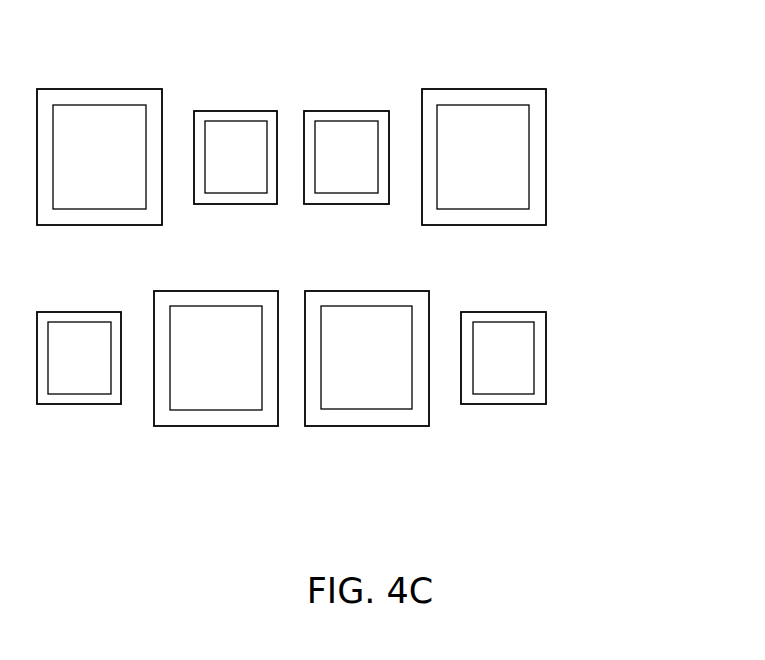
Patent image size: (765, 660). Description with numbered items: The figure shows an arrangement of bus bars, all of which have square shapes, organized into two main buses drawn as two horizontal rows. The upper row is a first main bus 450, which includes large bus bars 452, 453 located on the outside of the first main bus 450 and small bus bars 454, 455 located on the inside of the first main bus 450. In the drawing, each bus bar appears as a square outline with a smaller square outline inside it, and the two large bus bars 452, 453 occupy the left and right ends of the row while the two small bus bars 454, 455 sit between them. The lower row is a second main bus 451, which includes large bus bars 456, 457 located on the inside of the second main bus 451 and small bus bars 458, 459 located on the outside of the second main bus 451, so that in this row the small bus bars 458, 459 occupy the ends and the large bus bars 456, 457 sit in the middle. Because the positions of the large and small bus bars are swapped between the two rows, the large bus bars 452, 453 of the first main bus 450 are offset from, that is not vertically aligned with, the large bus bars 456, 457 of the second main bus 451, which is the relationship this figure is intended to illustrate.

The first main bus 450 is at (572, 148).
The second main bus 451 is at (572, 357).
The large bus bar 452 is at (99, 89).
The large bus bar 453 is at (482, 89).
The small bus bar 454 is at (236, 111).
The small bus bar 455 is at (346, 111).
The large bus bar 456 is at (217, 426).
The large bus bar 457 is at (368, 426).
The small bus bar 458 is at (80, 404).
The small bus bar 459 is at (503, 404).